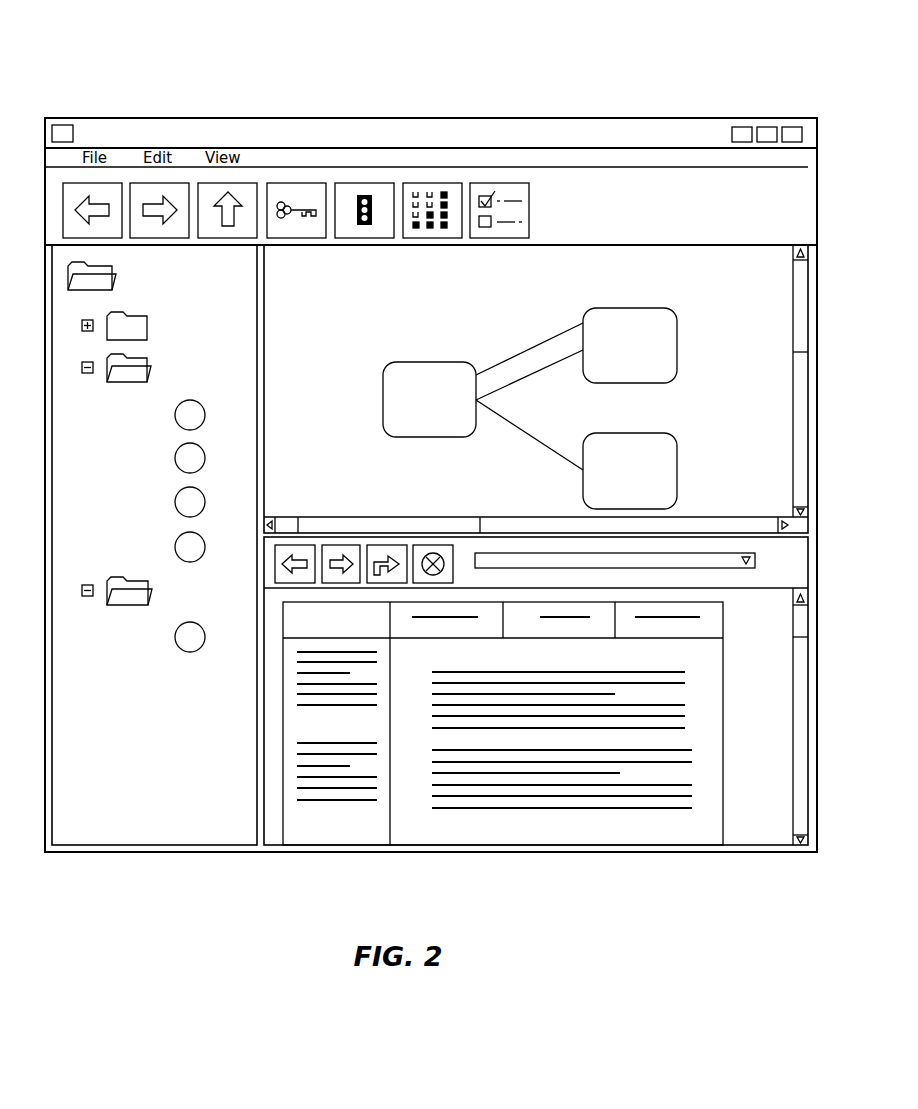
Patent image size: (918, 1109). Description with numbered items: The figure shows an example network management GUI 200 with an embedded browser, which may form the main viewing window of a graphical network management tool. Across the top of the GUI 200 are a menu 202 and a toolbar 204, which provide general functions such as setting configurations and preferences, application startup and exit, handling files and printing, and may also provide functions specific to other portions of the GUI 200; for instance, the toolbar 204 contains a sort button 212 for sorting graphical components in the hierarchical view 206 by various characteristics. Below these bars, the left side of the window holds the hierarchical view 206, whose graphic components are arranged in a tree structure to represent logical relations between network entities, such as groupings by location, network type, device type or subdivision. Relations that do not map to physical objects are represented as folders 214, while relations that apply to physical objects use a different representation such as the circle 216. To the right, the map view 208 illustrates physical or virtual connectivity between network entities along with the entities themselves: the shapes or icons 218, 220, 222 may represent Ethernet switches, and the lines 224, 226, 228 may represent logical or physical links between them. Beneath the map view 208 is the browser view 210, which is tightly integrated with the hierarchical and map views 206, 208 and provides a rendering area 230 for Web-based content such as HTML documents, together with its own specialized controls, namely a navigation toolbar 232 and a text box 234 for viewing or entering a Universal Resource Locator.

The network management GUI 200 is at (130, 57).
The menu 202 is at (218, 128).
The toolbar 204 is at (316, 168).
The hierarchical view 206 is at (151, 572).
The map view 208 is at (536, 311).
The browser view 210 is at (505, 726).
The sort button 212 is at (431, 182).
The folders 214 is at (120, 606).
The circle 216 is at (190, 652).
The shape/icon 218 is at (403, 438).
The shape/icon 220 is at (675, 375).
The shape/icon 222 is at (677, 487).
The line 224 is at (537, 447).
The line 226 is at (528, 348).
The line 228 is at (517, 380).
The rendering area 230 is at (638, 817).
The navigation toolbar 232 is at (313, 594).
The text box 234 is at (708, 568).